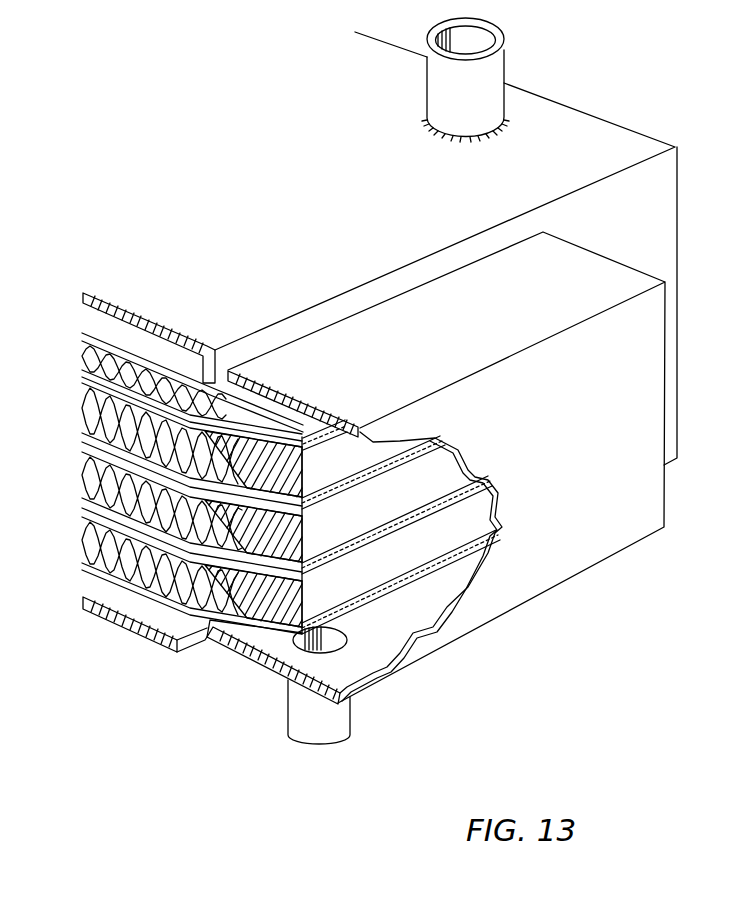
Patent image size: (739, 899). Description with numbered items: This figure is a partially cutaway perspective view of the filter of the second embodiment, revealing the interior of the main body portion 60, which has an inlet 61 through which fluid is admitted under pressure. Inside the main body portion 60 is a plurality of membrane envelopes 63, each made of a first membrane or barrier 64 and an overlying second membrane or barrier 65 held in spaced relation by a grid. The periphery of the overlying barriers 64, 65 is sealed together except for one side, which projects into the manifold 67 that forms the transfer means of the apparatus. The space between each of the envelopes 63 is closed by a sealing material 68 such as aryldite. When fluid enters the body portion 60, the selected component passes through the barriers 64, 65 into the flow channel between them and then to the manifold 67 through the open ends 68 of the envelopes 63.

The main body portion 60 is at (547, 118).
The inlet 61 is at (488, 71).
The membrane envelopes 63 is at (108, 556).
The first membrane or barrier 64 is at (171, 640).
The second membrane or barrier 65 is at (162, 550).
The manifold 67 is at (600, 528).
The sealing material 68 is at (290, 598).